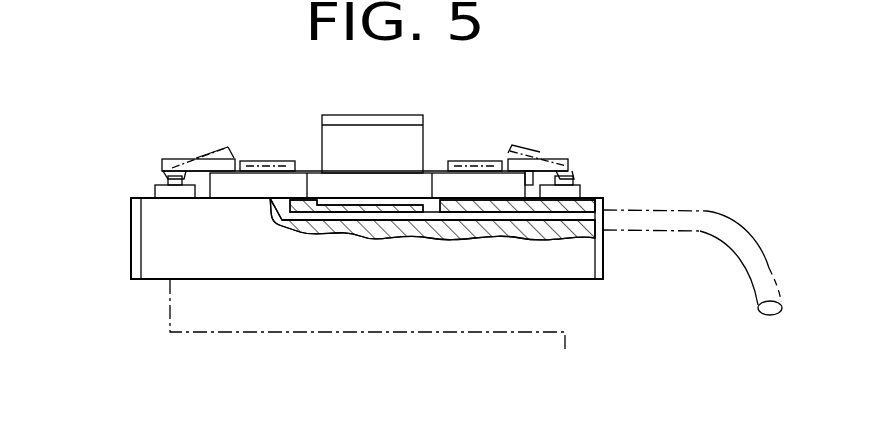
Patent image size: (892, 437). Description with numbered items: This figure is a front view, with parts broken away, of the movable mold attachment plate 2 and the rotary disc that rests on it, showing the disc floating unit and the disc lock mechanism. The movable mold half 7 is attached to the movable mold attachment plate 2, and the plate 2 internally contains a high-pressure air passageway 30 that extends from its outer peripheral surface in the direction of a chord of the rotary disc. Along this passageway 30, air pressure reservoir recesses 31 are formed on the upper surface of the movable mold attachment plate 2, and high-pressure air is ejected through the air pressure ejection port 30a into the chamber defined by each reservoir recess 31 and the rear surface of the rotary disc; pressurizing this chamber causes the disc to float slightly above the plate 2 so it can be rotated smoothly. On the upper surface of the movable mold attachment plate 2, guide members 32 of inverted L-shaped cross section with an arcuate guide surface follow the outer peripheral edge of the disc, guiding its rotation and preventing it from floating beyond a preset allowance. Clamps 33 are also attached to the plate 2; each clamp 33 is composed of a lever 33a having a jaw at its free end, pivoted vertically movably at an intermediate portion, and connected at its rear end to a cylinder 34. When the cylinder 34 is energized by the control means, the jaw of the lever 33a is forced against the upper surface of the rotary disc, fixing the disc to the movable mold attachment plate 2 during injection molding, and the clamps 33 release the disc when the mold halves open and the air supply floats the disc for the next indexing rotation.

The movable mold attachment plate 2 is at (604, 252).
The movable mold half 7 is at (540, 313).
The high-pressure air passageway 30 is at (579, 214).
The air pressure ejection port 30a is at (306, 211).
The air pressure reservoir recess 31 is at (305, 196).
The guide member 32 is at (262, 161).
The clamp 33 is at (156, 164).
The lever 33a is at (170, 159).
The cylinder 34 is at (172, 190).